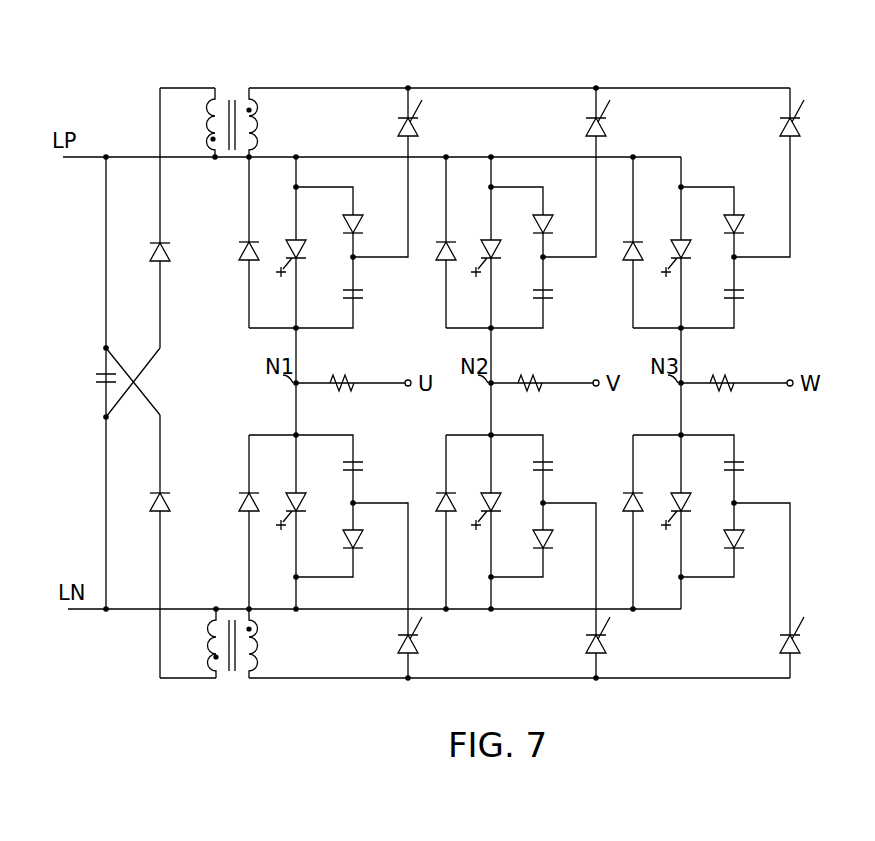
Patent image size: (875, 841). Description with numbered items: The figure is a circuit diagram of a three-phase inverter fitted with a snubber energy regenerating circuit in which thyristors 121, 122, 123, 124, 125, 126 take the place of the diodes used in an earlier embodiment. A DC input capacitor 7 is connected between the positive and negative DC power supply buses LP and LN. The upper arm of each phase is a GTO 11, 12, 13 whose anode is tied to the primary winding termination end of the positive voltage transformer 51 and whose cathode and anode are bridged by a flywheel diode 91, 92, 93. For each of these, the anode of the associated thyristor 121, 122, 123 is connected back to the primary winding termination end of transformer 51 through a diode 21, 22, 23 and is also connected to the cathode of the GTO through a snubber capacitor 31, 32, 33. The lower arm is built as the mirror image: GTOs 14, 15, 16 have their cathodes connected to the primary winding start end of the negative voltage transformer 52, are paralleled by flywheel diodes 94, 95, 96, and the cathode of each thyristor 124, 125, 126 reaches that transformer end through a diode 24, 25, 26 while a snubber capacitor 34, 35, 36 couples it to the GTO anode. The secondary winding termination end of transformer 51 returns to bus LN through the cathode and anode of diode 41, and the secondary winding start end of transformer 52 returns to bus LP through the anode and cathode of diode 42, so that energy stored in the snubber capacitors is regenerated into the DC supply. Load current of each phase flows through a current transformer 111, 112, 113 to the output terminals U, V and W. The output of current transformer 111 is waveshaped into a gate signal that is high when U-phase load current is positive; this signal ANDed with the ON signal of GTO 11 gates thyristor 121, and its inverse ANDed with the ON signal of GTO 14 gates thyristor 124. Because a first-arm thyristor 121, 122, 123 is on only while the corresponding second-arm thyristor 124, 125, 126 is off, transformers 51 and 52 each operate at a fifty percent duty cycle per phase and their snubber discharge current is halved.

The DC input capacitor 7 is at (93, 379).
The GTO 11 is at (292, 240).
The GTO 12 is at (487, 240).
The GTO 13 is at (677, 240).
The GTO 14 is at (290, 490).
The GTO 15 is at (485, 490).
The GTO 16 is at (675, 490).
The diode 21 is at (361, 216).
The diode 22 is at (551, 216).
The diode 23 is at (742, 216).
The diode 24 is at (364, 548).
The diode 25 is at (554, 548).
The diode 26 is at (745, 548).
The snubber capacitor 31 is at (364, 296).
The snubber capacitor 32 is at (554, 296).
The snubber capacitor 33 is at (745, 296).
The snubber capacitor 34 is at (364, 464).
The snubber capacitor 35 is at (554, 464).
The snubber capacitor 36 is at (745, 464).
The diode 41 is at (154, 266).
The diode 42 is at (153, 489).
The voltage transformer 51 is at (231, 90).
The voltage transformer 52 is at (231, 673).
The flywheel diode 91 is at (240, 258).
The flywheel diode 92 is at (437, 258).
The flywheel diode 93 is at (624, 258).
The flywheel diode 94 is at (242, 488).
The flywheel diode 95 is at (439, 488).
The flywheel diode 96 is at (626, 488).
The current transformer 111 is at (347, 372).
The current transformer 112 is at (537, 372).
The current transformer 113 is at (729, 372).
The thyristor 121 is at (418, 125).
The thyristor 122 is at (606, 125).
The thyristor 123 is at (800, 125).
The thyristor 124 is at (420, 645).
The thyristor 125 is at (608, 645).
The thyristor 126 is at (802, 645).